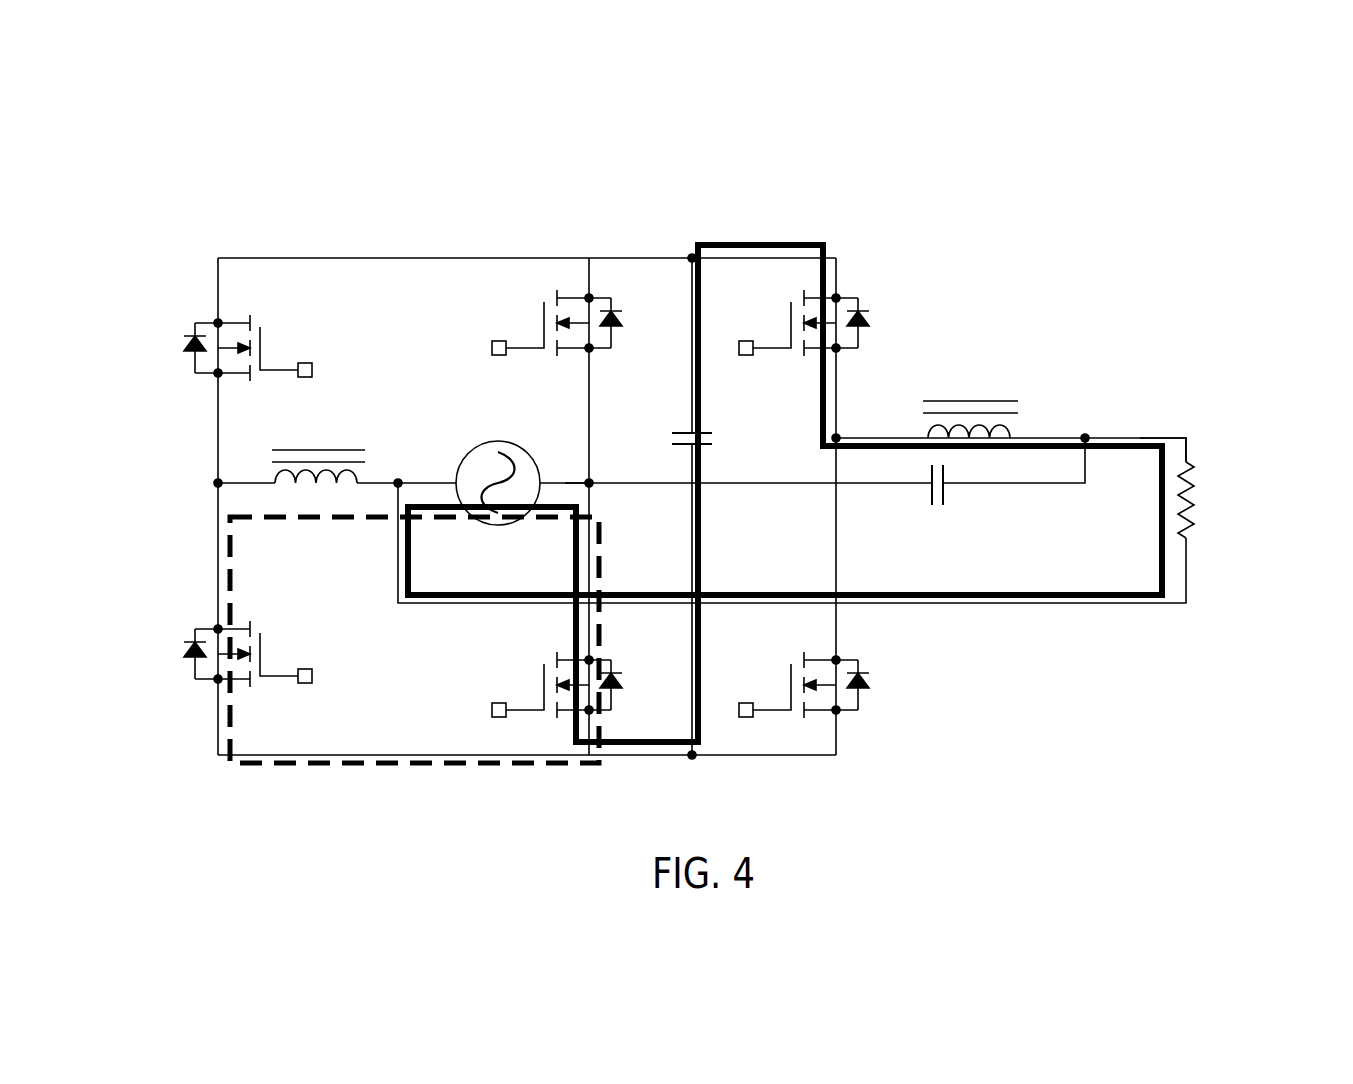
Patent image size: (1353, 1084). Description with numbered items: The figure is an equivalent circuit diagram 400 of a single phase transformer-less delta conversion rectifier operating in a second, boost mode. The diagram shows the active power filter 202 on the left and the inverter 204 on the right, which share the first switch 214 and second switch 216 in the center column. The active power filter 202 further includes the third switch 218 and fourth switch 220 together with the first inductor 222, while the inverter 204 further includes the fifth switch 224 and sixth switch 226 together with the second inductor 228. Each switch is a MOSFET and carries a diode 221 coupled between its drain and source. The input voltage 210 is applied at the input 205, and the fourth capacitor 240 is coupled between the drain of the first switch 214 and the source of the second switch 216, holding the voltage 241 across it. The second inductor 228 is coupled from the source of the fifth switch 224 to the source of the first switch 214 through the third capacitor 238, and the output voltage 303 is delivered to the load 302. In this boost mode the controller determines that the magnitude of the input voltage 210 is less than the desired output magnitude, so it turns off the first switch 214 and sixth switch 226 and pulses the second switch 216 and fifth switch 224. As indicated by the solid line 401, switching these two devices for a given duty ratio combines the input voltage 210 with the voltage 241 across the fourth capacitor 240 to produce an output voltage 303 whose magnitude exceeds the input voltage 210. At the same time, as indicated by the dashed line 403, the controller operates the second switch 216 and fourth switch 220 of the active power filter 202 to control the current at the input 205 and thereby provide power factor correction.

The equivalent circuit diagram 400 is at (146, 218).
The active power filter 202 is at (212, 772).
The inverter 204 is at (864, 242).
The input 205 is at (572, 480).
The input voltage 210 is at (462, 458).
The first switch 214 is at (555, 293).
The second switch 216 is at (556, 653).
The third switch 218 is at (252, 316).
The fourth switch 220 is at (253, 680).
The diode 221 is at (192, 350).
The first inductor 222 is at (273, 478).
The fifth switch 224 is at (800, 298).
The sixth switch 226 is at (800, 656).
The second inductor 228 is at (1011, 430).
The third capacitor 238 is at (945, 490).
The fourth capacitor 240 is at (680, 432).
The voltage 241 is at (731, 436).
The load 302 is at (1190, 470).
The output voltage 303 is at (1245, 490).
The solid line 401 is at (1118, 448).
The dashed line 403 is at (350, 766).